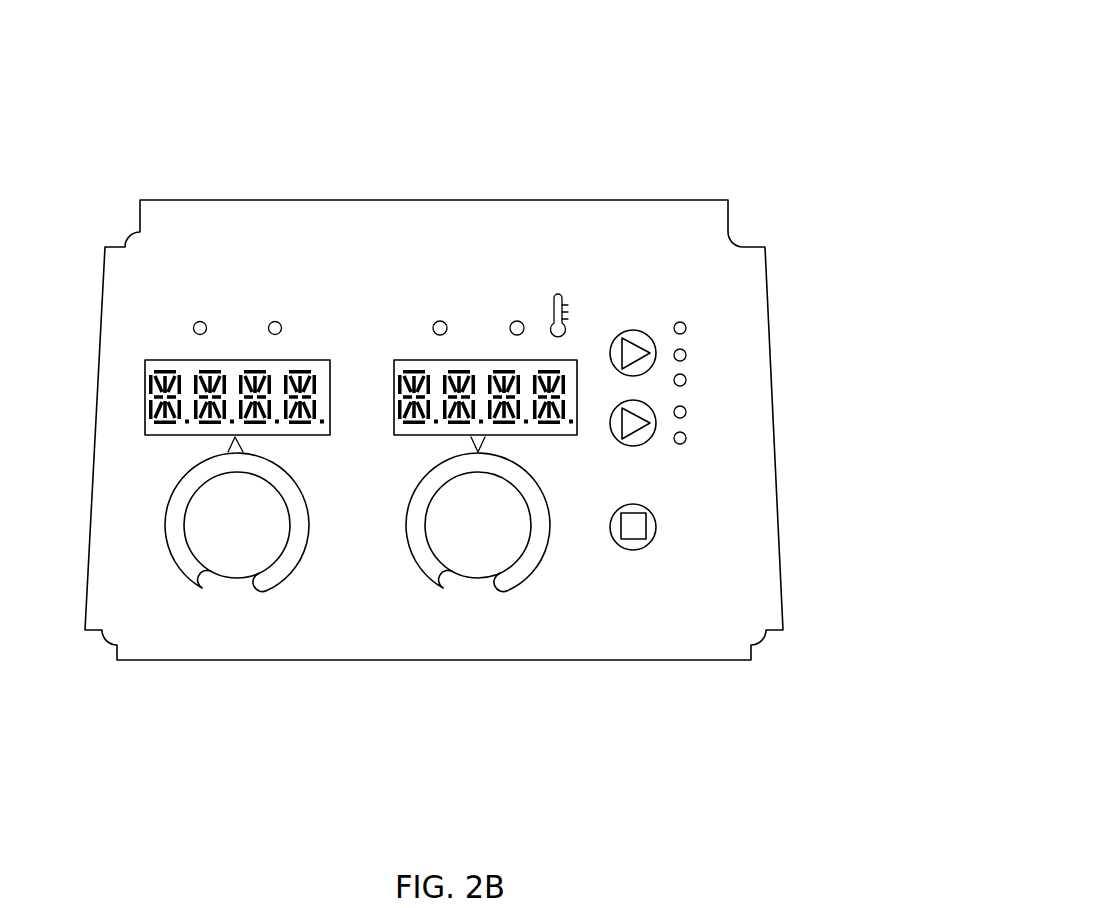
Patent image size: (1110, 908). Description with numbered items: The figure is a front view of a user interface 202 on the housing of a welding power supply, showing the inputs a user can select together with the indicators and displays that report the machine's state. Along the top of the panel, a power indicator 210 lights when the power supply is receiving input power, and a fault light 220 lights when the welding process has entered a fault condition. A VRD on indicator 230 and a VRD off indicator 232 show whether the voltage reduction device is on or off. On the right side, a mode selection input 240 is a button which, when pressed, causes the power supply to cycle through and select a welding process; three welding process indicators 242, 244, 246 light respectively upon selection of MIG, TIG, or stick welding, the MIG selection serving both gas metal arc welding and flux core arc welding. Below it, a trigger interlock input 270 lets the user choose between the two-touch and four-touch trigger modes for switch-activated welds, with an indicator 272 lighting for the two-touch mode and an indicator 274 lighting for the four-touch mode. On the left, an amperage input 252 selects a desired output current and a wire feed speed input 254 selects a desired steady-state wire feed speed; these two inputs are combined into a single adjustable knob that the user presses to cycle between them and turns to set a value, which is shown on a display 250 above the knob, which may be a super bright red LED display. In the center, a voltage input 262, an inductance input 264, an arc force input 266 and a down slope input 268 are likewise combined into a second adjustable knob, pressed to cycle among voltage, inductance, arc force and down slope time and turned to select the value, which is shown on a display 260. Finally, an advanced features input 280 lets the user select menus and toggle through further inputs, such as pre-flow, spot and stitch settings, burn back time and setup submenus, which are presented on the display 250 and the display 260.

The user interface 202 is at (691, 61).
The power indicator 210 is at (434, 338).
The fault light 220 is at (511, 338).
The VRD on indicator 230 is at (201, 317).
The VRD off indicator 232 is at (276, 317).
The mode selection input 240 is at (626, 334).
The welding process indicator 242 is at (679, 321).
The welding process indicator 244 is at (683, 348).
The welding process indicator 246 is at (684, 372).
The display 250 is at (297, 441).
The amperage input 252 is at (188, 596).
The wire feed speed input 254 is at (236, 566).
The display 260 is at (419, 438).
The voltage input 262 is at (588, 596).
The inductance input 264 is at (588, 596).
The arc force input 266 is at (588, 596).
The down slope input 268 is at (494, 571).
The trigger interlock input 270 is at (615, 402).
The indicator 272 is at (684, 404).
The indicator 274 is at (685, 444).
The advanced features input 280 is at (651, 542).